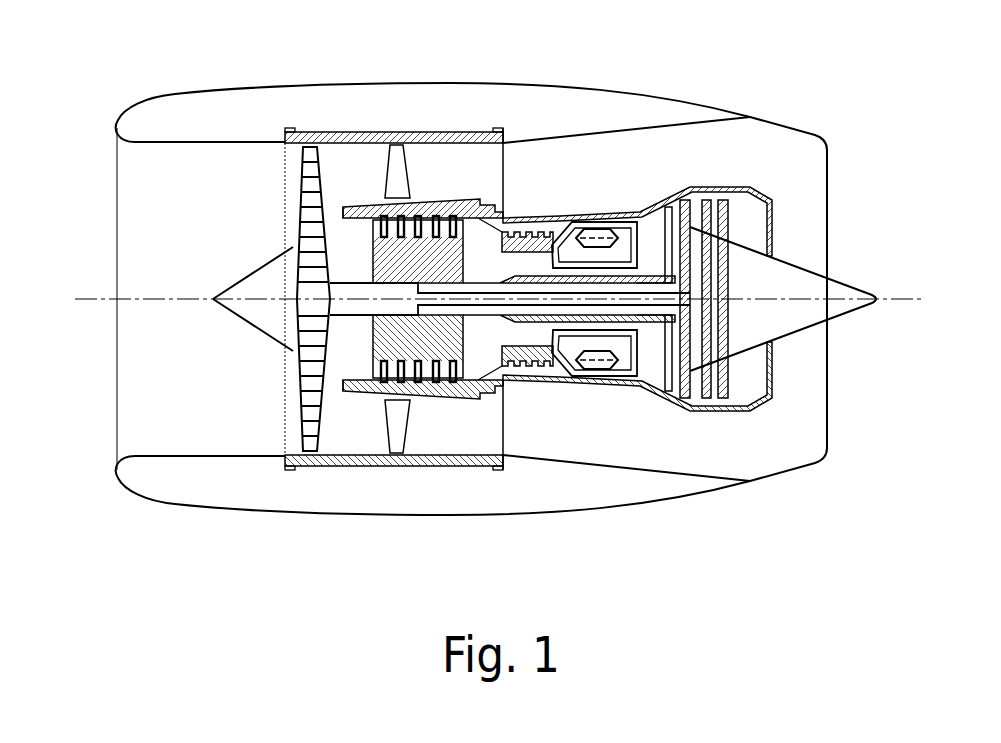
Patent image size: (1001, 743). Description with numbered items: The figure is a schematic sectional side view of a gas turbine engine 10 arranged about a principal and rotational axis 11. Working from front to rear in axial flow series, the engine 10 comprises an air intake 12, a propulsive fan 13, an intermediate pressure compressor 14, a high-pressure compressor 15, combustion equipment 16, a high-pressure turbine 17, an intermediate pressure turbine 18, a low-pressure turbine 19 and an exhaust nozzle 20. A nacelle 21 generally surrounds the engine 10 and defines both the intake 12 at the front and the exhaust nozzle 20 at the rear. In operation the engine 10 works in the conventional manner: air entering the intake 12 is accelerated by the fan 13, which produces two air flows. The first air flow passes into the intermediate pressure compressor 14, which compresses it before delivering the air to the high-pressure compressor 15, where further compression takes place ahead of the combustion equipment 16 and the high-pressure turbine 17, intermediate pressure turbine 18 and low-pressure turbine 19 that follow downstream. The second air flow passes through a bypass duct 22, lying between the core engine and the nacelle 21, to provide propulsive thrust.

The gas turbine engine 10 is at (88, 168).
The principal and rotational axis 11 is at (96, 299).
The air intake 12 is at (222, 143).
The propulsive fan 13 is at (300, 415).
The intermediate pressure compressor 14 is at (408, 385).
The high-pressure compressor 15 is at (521, 234).
The combustion equipment 16 is at (582, 360).
The high-pressure turbine 17 is at (623, 364).
The intermediate pressure turbine 18 is at (658, 218).
The low-pressure turbine 19 is at (676, 378).
The exhaust nozzle 20 is at (827, 437).
The nacelle 21 is at (585, 85).
The bypass duct 22 is at (468, 193).